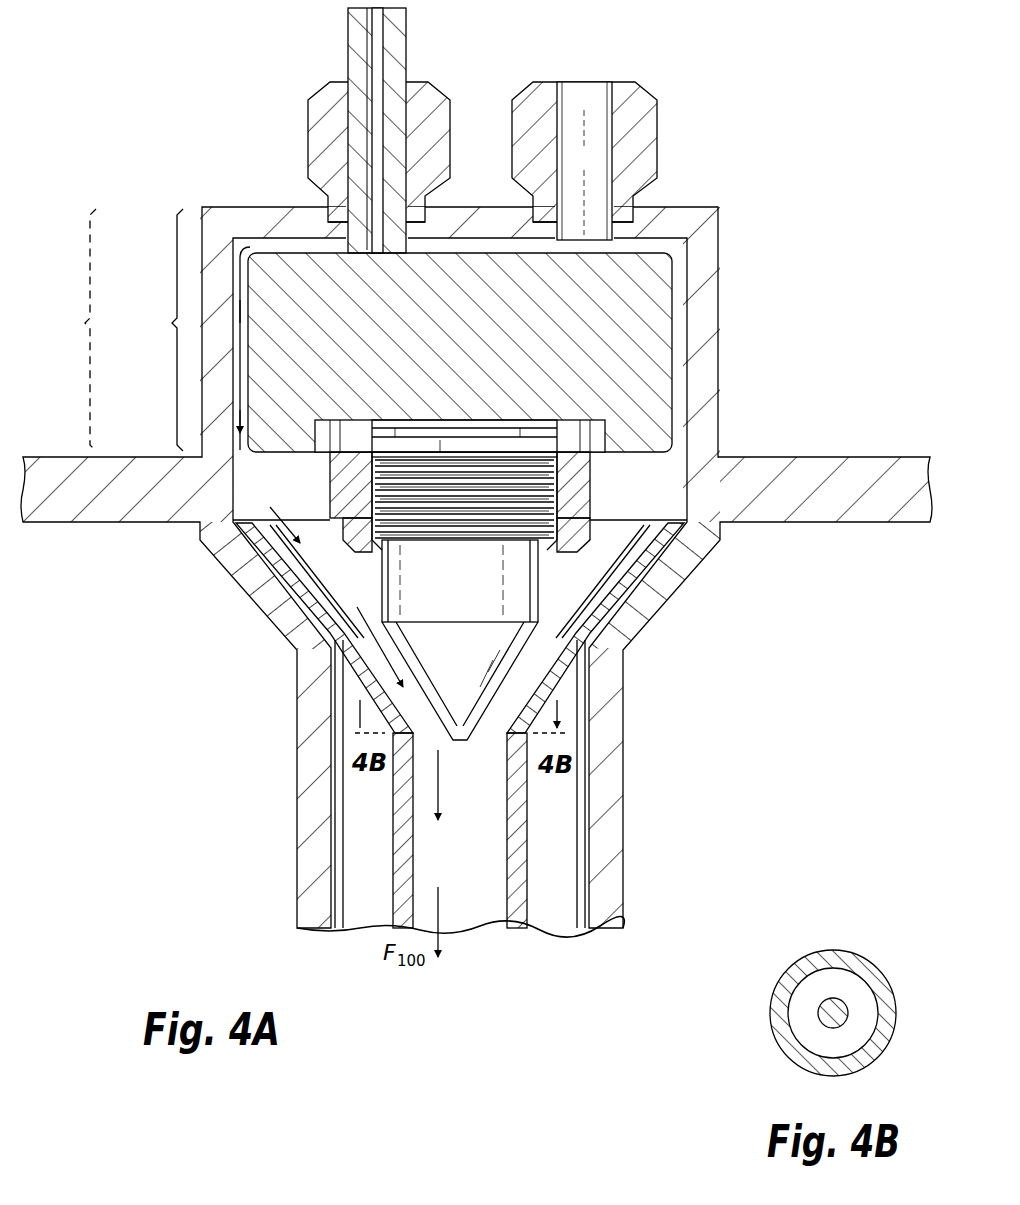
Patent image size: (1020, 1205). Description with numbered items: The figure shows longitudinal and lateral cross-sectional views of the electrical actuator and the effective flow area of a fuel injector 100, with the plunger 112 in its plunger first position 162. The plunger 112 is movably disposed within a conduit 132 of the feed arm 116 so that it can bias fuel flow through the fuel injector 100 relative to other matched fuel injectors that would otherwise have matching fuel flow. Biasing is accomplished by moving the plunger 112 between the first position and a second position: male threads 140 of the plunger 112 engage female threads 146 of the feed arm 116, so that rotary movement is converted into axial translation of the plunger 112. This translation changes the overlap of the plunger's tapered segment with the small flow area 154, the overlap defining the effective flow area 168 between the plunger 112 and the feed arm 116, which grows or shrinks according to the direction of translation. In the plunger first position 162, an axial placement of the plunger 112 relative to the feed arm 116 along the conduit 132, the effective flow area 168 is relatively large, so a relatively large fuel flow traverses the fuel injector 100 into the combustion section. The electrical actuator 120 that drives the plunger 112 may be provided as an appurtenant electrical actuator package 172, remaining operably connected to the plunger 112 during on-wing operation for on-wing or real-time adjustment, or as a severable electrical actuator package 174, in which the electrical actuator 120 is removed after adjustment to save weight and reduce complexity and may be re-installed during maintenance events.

In FIG. 4A, the fuel injector 100 is at (122, 156).
In FIG. 4A, the plunger 112 is at (482, 614).
In FIG. 4A, the feed arm 116 is at (620, 808).
In FIG. 4A, the electrical actuator 120 is at (630, 303).
In FIG. 4A, the conduit 132 is at (488, 907).
In FIG. 4A, the male threads 140 is at (493, 475).
In FIG. 4A, the female threads 146 is at (540, 541).
In FIG. 4A, the small flow area 154 is at (492, 728).
In FIG. 4A, the plunger first position 162 is at (672, 706).
In FIG. 4B, the plunger first position 162 is at (913, 917).
In FIG. 4B, the effective flow area 168 is at (842, 990).
In FIG. 4A, the appurtenant electrical actuator package 172 is at (156, 330).
In FIG. 4A, the severable electrical actuator package 174 is at (65, 330).